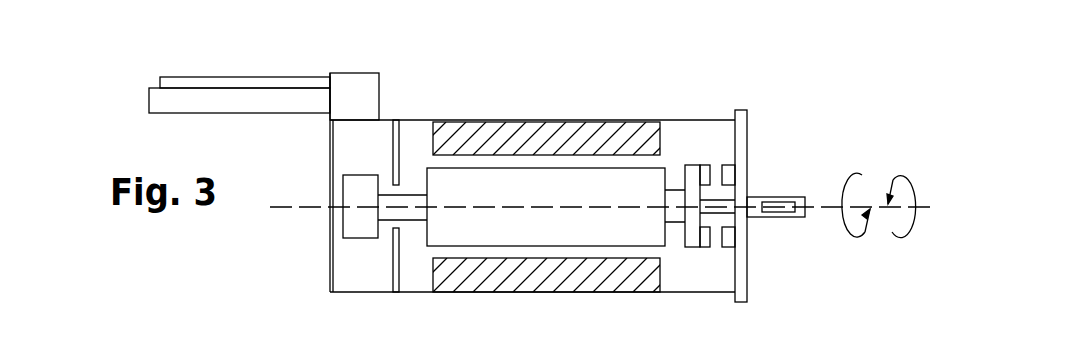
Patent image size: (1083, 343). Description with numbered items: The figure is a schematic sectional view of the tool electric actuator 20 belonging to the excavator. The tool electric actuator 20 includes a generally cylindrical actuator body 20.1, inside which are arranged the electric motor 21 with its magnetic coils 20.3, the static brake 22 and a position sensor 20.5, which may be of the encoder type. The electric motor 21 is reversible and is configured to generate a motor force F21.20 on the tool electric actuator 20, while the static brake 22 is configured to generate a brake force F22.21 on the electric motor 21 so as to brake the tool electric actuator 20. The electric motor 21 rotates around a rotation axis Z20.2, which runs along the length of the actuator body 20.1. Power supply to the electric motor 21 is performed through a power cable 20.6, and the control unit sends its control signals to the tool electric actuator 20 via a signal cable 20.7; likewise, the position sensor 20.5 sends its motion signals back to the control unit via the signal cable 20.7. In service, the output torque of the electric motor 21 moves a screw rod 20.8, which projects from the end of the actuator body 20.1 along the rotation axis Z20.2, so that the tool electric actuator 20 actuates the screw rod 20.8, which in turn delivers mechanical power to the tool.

The tool electric actuator 20 is at (96, 77).
The actuator body 20.1 is at (690, 140).
The magnetic coils 20.3 is at (550, 140).
The position sensor 20.5 is at (358, 225).
The power cable 20.6 is at (200, 102).
The signal cable 20.7 is at (263, 83).
The screw rod 20.8 is at (775, 203).
The electric motor 21 is at (590, 190).
The static brake 22 is at (693, 237).
The rotation axis Z20.2 is at (828, 209).
The motor force F21.20 is at (860, 183).
The brake force F22.21 is at (893, 232).